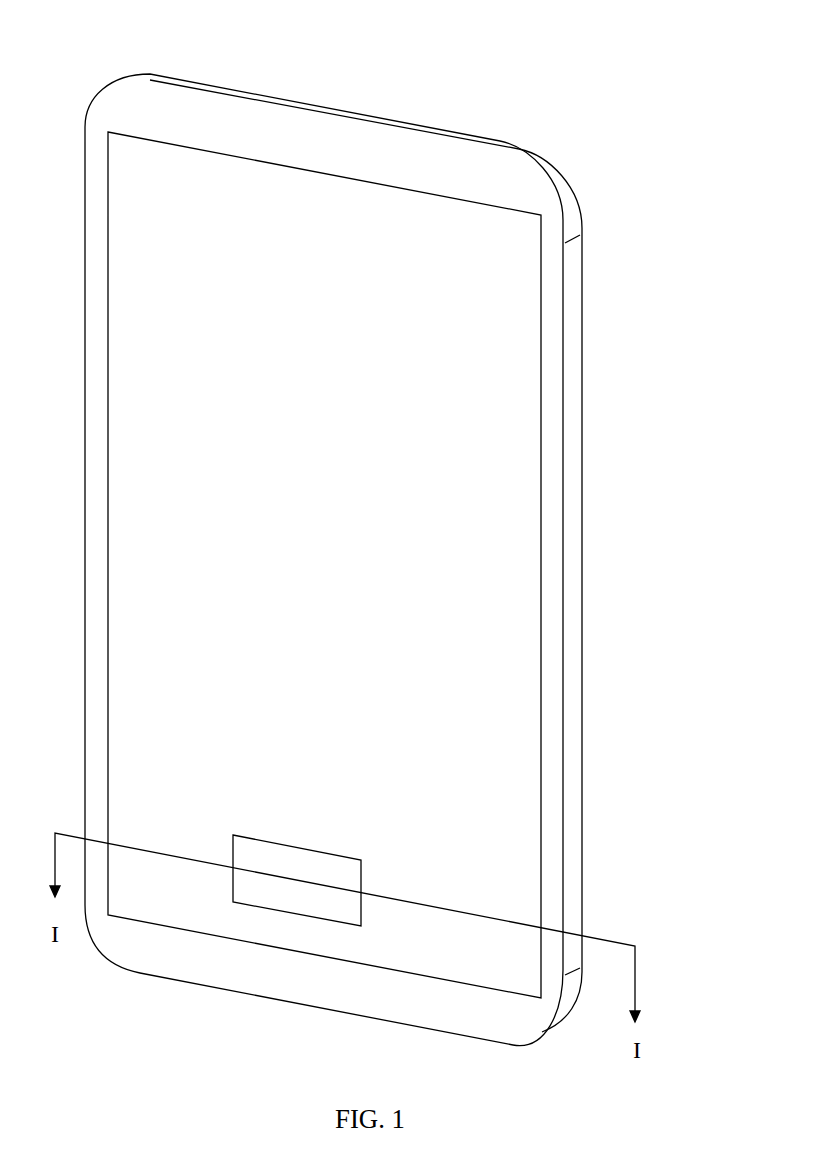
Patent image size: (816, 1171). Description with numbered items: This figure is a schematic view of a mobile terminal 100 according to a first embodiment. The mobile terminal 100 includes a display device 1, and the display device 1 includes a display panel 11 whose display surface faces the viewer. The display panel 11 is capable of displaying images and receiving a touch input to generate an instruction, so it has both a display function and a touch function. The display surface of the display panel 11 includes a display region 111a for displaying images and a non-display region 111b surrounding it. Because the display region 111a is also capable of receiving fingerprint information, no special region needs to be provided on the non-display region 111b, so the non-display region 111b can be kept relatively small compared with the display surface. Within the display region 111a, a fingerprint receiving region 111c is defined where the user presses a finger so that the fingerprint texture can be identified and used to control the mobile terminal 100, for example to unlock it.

The mobile terminal 100 is at (495, 88).
The display device 1 is at (515, 187).
The display panel 11 is at (565, 557).
The display region 111a is at (523, 720).
The non-display region 111b is at (178, 958).
The fingerprint receiving region 111c is at (355, 859).